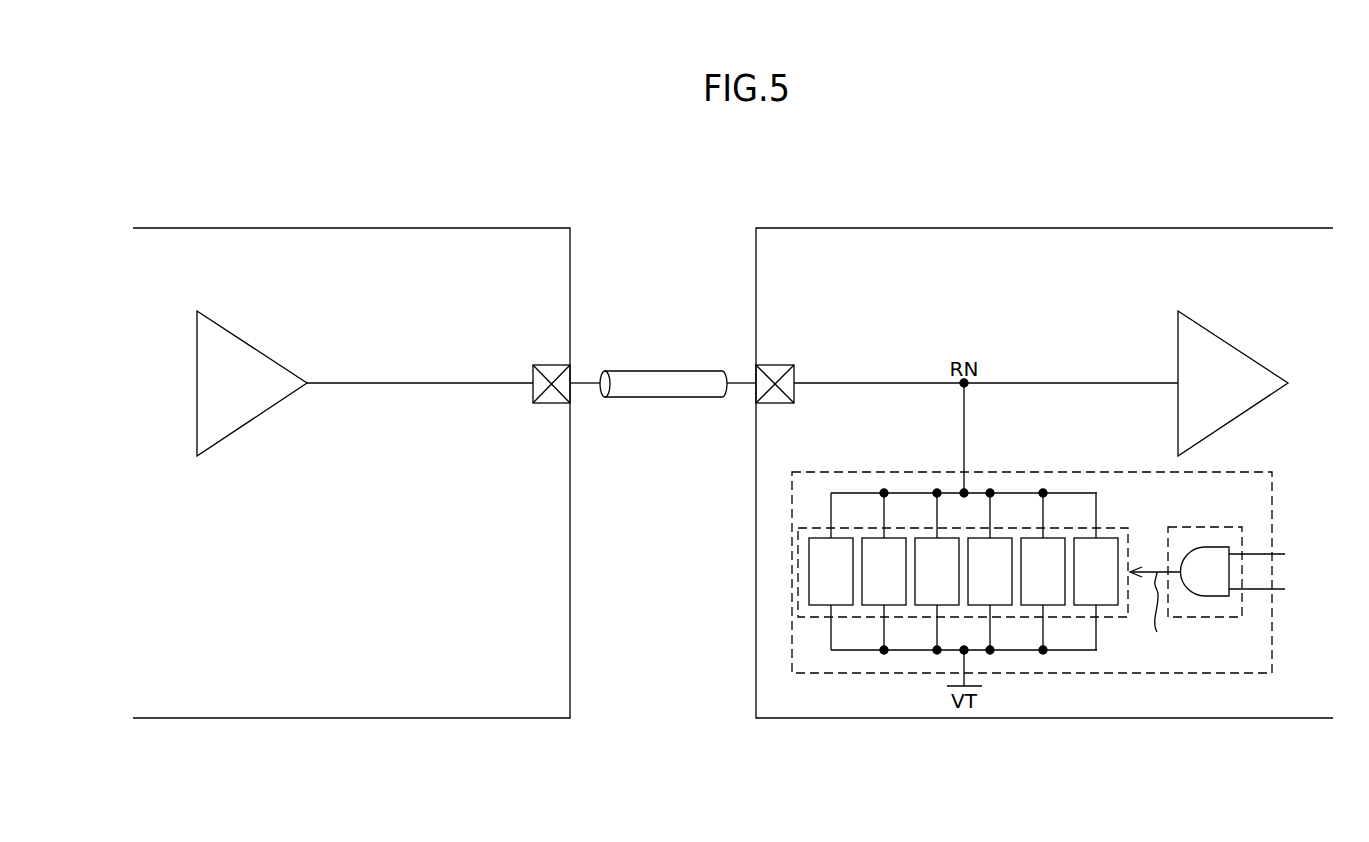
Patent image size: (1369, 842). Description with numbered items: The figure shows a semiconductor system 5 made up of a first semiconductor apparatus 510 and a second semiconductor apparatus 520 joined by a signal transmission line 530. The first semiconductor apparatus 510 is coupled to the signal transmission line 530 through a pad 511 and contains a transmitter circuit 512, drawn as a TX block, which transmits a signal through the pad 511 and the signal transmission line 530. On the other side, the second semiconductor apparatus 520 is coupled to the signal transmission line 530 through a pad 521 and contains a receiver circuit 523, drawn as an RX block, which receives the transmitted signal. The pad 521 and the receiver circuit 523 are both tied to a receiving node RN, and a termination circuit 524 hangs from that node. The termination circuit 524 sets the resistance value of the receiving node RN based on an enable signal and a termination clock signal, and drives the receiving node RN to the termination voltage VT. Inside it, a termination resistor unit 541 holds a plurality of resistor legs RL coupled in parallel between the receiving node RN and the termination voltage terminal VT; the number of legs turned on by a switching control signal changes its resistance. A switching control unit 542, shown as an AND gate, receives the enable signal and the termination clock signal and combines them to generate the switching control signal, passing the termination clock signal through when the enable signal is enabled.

The semiconductor system 5 is at (133, 165).
The first semiconductor apparatus 510 is at (515, 228).
The pad 511 is at (548, 365).
The transmitter circuit 512 is at (250, 347).
The second semiconductor apparatus 520 is at (1290, 228).
The pad 521 is at (785, 365).
The receiver circuit 523 is at (1232, 347).
The termination circuit 524 is at (1063, 472).
The signal transmission line 530 is at (672, 371).
The termination resistor unit 541 is at (1108, 528).
The switching control unit 542 is at (1223, 527).